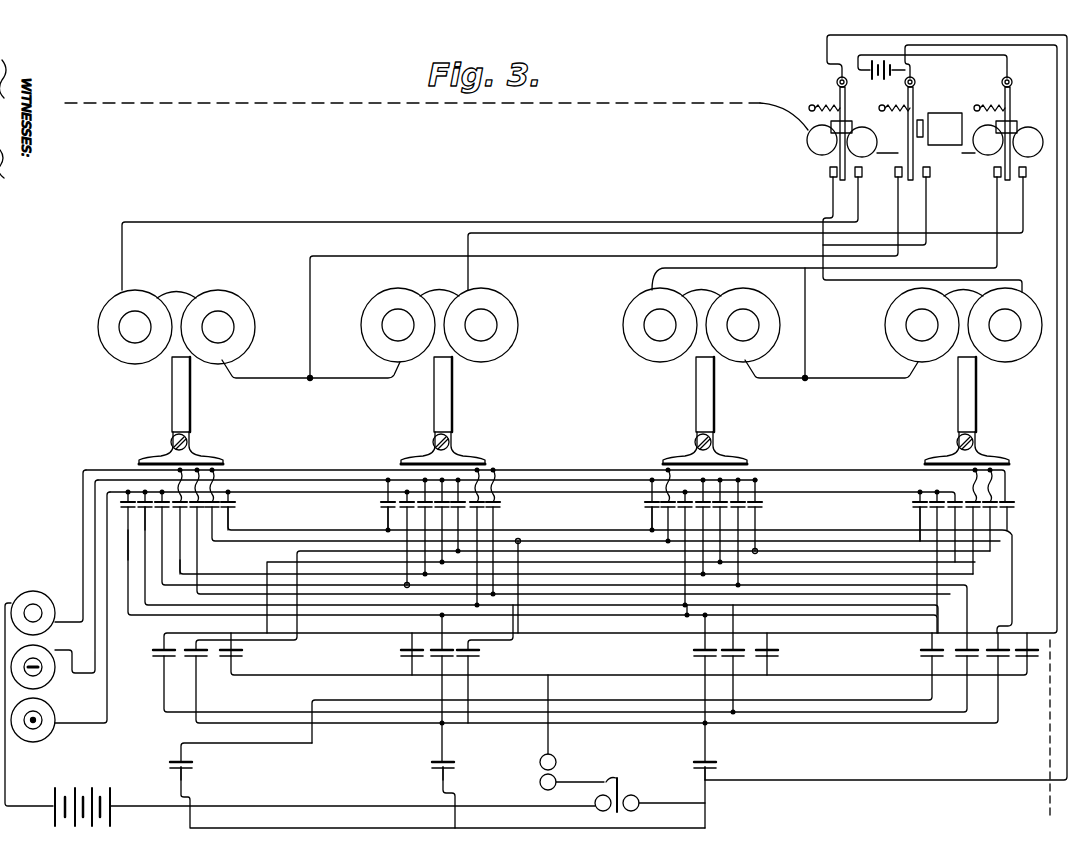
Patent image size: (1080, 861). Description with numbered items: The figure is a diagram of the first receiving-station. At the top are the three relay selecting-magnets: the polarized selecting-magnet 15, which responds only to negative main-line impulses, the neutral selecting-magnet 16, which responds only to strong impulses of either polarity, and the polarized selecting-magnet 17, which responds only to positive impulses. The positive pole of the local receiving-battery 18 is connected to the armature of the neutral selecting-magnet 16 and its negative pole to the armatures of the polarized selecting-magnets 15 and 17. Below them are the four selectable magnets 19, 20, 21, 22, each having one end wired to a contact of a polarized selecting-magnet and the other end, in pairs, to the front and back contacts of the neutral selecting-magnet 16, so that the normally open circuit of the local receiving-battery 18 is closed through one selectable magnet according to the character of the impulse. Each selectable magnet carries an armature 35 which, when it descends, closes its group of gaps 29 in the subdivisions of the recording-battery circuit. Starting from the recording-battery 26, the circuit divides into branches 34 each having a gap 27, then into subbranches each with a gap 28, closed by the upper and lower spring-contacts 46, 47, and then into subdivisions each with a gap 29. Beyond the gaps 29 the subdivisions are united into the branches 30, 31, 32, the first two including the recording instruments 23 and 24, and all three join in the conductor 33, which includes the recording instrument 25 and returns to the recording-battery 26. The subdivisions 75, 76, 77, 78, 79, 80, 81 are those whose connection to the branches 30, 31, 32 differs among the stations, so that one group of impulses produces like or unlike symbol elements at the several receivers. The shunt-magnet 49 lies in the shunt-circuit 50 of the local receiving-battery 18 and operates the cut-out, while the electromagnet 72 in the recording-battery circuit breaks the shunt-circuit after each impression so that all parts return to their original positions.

The polarized selecting-magnet 15 is at (838, 128).
The neutral selecting-magnet 16 is at (927, 128).
The polarized selecting-magnet 17 is at (1008, 128).
The local receiving-battery 18 is at (932, 77).
The selectable magnet 19 is at (176, 320).
The selectable magnet 20 is at (439, 319).
The selectable magnet 21 is at (701, 319).
The selectable magnet 22 is at (963, 319).
The recording instrument 23 is at (42, 723).
The recording instrument 24 is at (38, 660).
The recording instrument 25 is at (42, 612).
The recording-battery 26 is at (82, 797).
The gap 27 is at (456, 764).
The gap 28 is at (581, 664).
The gap 29 is at (580, 498).
The branch 30 is at (505, 606).
The branch 31 is at (320, 486).
The branch 32 is at (530, 538).
The conductor 33 is at (29, 704).
The branch 34 is at (455, 784).
The armature 35 is at (578, 410).
The upper spring-contact 46 is at (633, 645).
The lower spring-contact 47 is at (638, 662).
The shunt-magnet 49 is at (572, 732).
The shunt-circuit 50 is at (615, 407).
The electromagnet 72 is at (650, 808).
The subdivision 75 is at (957, 518).
The subdivision 76 is at (165, 563).
The subdivision 77 is at (668, 515).
The subdivision 78 is at (405, 514).
The subdivision 79 is at (145, 522).
The subdivision 80 is at (228, 525).
The subdivision 81 is at (118, 545).